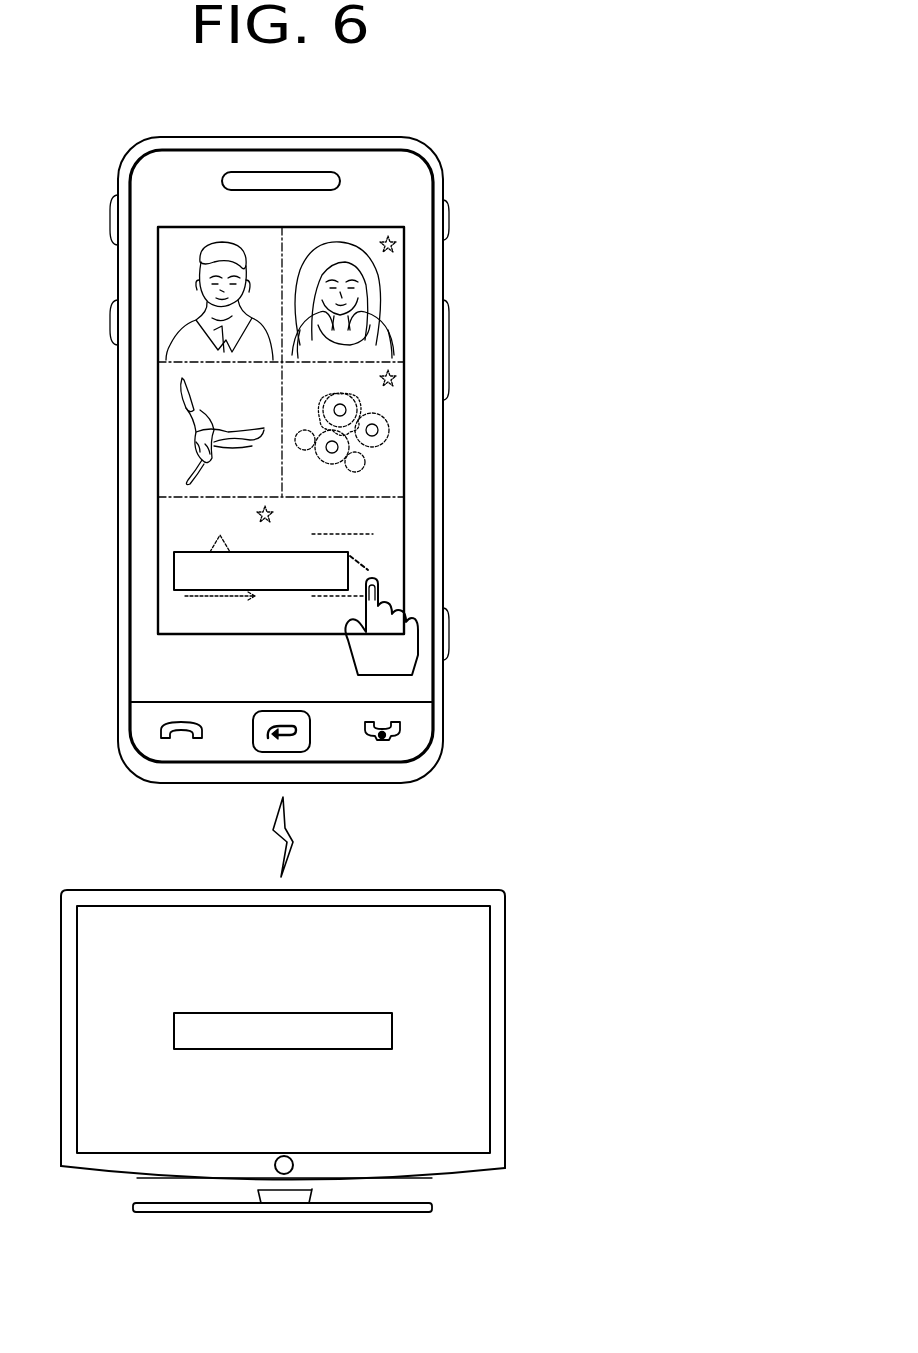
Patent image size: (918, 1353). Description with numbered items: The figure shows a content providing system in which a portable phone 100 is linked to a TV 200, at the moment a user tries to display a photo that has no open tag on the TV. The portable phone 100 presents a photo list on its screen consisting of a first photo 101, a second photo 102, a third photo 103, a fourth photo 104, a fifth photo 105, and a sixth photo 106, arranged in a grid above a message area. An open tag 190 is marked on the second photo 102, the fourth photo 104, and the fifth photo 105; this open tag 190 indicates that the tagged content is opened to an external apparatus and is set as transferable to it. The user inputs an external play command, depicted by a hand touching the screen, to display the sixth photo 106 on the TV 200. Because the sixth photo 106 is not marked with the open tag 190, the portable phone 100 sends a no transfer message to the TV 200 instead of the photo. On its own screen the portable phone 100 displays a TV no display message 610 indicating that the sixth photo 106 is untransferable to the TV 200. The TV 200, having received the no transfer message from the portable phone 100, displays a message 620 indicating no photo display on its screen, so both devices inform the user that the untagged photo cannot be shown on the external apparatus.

The portable phone 100 is at (388, 137).
The first photo 101 is at (162, 283).
The second photo 102 is at (400, 283).
The third photo 103 is at (162, 432).
The fourth photo 104 is at (405, 432).
The fifth photo 105 is at (165, 576).
The sixth photo 106 is at (405, 573).
The open tag 190 is at (396, 238).
The TV 200 is at (463, 889).
The TV no display message 610 is at (330, 553).
The no photo display message 620 is at (392, 1013).